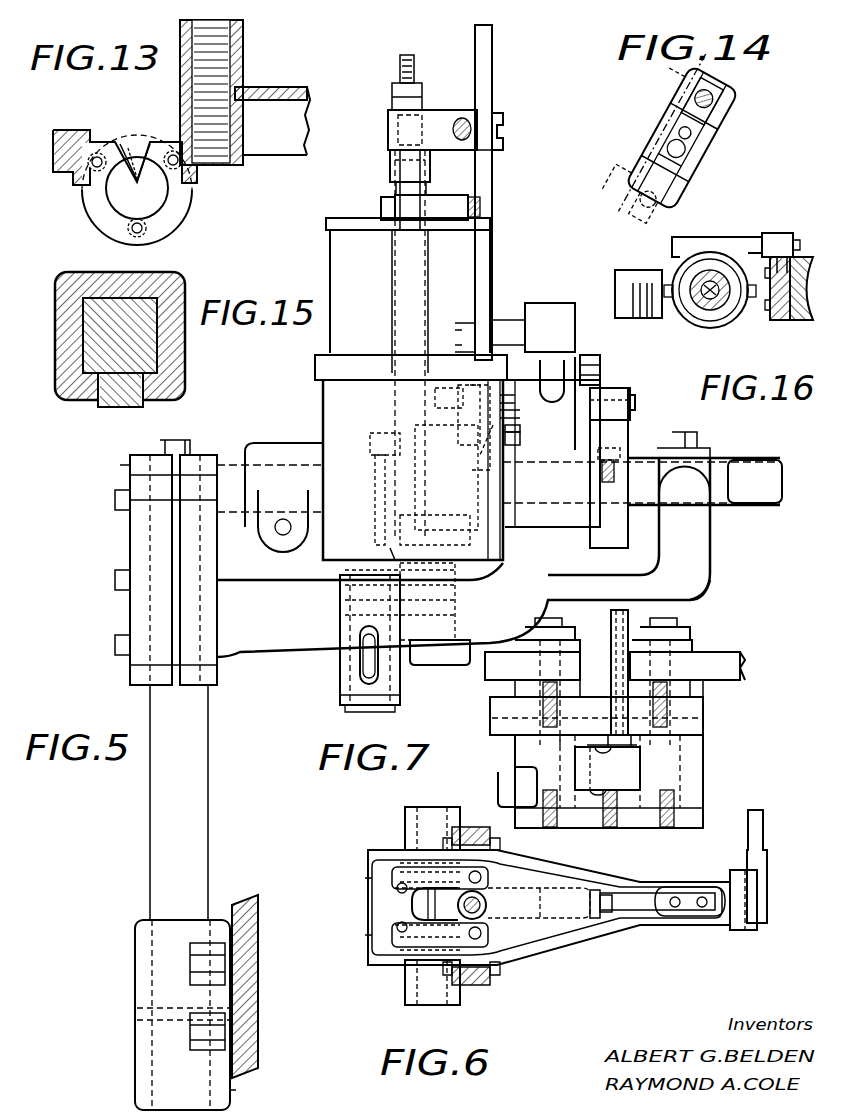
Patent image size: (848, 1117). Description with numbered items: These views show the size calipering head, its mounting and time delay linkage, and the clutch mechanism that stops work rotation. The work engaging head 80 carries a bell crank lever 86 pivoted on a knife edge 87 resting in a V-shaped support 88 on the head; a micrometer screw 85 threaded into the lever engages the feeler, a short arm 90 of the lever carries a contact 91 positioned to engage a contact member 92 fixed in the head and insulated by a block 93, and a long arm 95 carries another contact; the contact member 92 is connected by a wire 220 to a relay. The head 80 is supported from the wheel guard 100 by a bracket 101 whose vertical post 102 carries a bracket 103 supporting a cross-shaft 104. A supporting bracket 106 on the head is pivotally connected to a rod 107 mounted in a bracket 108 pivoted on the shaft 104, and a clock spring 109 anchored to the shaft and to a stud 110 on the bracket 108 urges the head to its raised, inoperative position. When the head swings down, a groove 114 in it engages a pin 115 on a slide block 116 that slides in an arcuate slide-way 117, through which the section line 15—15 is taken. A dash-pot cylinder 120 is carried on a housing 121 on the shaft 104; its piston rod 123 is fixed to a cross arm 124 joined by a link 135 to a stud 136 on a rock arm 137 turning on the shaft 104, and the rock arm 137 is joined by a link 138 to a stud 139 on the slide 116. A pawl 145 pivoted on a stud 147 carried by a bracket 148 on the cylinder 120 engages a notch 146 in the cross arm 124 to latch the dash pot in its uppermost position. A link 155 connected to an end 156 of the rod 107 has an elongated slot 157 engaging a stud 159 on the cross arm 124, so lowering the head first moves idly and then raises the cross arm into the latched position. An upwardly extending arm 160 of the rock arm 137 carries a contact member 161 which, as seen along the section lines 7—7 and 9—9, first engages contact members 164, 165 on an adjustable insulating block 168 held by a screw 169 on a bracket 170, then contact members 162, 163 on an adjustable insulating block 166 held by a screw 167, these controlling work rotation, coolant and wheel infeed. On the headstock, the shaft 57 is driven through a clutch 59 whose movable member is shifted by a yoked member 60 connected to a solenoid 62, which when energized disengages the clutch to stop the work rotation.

In FIG. 5, the section line 7 is at (316, 380).
In FIG. 5, the section line 9 is at (314, 347).
In FIG. 14, the section line 15 is at (660, 80).
In FIG. 16, the shaft 57 is at (708, 300).
In FIG. 16, the clutch 59 is at (735, 312).
In FIG. 16, the yoked member 60 is at (715, 247).
In FIG. 16, the solenoid 62 is at (632, 272).
In FIG. 6, the work engaging head 80 is at (630, 920).
In FIG. 6, the micrometer screw 85 is at (480, 915).
In FIG. 6, the bell crank lever 86 is at (420, 905).
In FIG. 13, the knife edge 87 is at (136, 176).
In FIG. 6, the knife edge 87 is at (395, 870).
In FIG. 13, the V-shaped support 88 is at (90, 193).
In FIG. 6, the V-shaped support 88 is at (408, 815).
In FIG. 13, the short arm 90 is at (282, 88).
In FIG. 6, the short arm 90 is at (520, 918).
In FIG. 6, the contact 91 is at (608, 912).
In FIG. 6, the contact member 92 is at (650, 905).
In FIG. 6, the block 93 is at (597, 908).
In FIG. 6, the long arm 95 is at (392, 905).
In FIG. 5, the wheel guard 100 is at (255, 1040).
In FIG. 5, the bracket 101 is at (143, 982).
In FIG. 5, the post 102 is at (158, 832).
In FIG. 5, the bracket 103 is at (262, 650).
In FIG. 5, the cross-shaft 104 is at (228, 508).
In FIG. 6, the supporting bracket 106 is at (492, 835).
In FIG. 5, the rod 107 is at (565, 365).
In FIG. 5, the bracket 108 is at (600, 372).
In FIG. 5, the clock spring 109 is at (615, 435).
In FIG. 5, the stud 110 is at (632, 398).
In FIG. 5, the groove 114 is at (345, 598).
In FIG. 6, the groove 114 is at (752, 930).
In FIG. 14, the pin 115 is at (705, 157).
In FIG. 5, the pin 115 is at (355, 612).
In FIG. 6, the pin 115 is at (763, 868).
In FIG. 15, the slide block 116 is at (145, 348).
In FIG. 14, the slide block 116 is at (660, 140).
In FIG. 5, the slide block 116 is at (455, 592).
In FIG. 15, the arcuate slide-way 117 is at (72, 395).
In FIG. 14, the arcuate slide-way 117 is at (668, 122).
In FIG. 5, the arcuate slide-way 117 is at (440, 652).
In FIG. 5, the dash-pot cylinder 120 is at (338, 258).
In FIG. 5, the housing 121 is at (345, 390).
In FIG. 5, the piston rod 123 is at (420, 162).
In FIG. 5, the cross arm 124 is at (445, 112).
In FIG. 5, the link 135 is at (405, 265).
In FIG. 5, the stud 136 is at (372, 440).
In FIG. 5, the rock arm 137 is at (439, 485).
In FIG. 7, the rock arm 137 is at (503, 782).
In FIG. 5, the link 138 is at (390, 490).
In FIG. 14, the stud 139 is at (722, 92).
In FIG. 5, the stud 139 is at (388, 548).
In FIG. 5, the pawl 145 is at (400, 186).
In FIG. 5, the notch 146 is at (395, 143).
In FIG. 5, the stud 147 is at (385, 208).
In FIG. 5, the bracket 148 is at (445, 200).
In FIG. 5, the link 155 is at (485, 178).
In FIG. 5, the end 156 is at (540, 310).
In FIG. 5, the elongated slot 157 is at (487, 42).
In FIG. 5, the stud 159 is at (503, 118).
In FIG. 5, the arm 160 is at (432, 408).
In FIG. 7, the arm 160 is at (625, 782).
In FIG. 5, the contact member 161 is at (462, 384).
In FIG. 7, the contact member 161 is at (608, 748).
In FIG. 5, the contact member 162 is at (475, 395).
In FIG. 7, the contact member 162 is at (628, 630).
In FIG. 5, the contact member 163 is at (480, 448).
In FIG. 5, the contact member 164 is at (512, 393).
In FIG. 7, the contact member 164 is at (610, 628).
In FIG. 5, the contact member 165 is at (520, 428).
In FIG. 7, the adjustable insulating block 166 is at (690, 715).
In FIG. 5, the screw 167 is at (520, 440).
In FIG. 7, the screw 167 is at (670, 638).
In FIG. 7, the adjustable insulating block 168 is at (495, 710).
In FIG. 5, the screw 169 is at (520, 414).
In FIG. 7, the screw 169 is at (548, 632).
In FIG. 5, the bracket 170 is at (505, 552).
In FIG. 7, the bracket 170 is at (720, 660).
In FIG. 6, the wire 220 is at (690, 902).